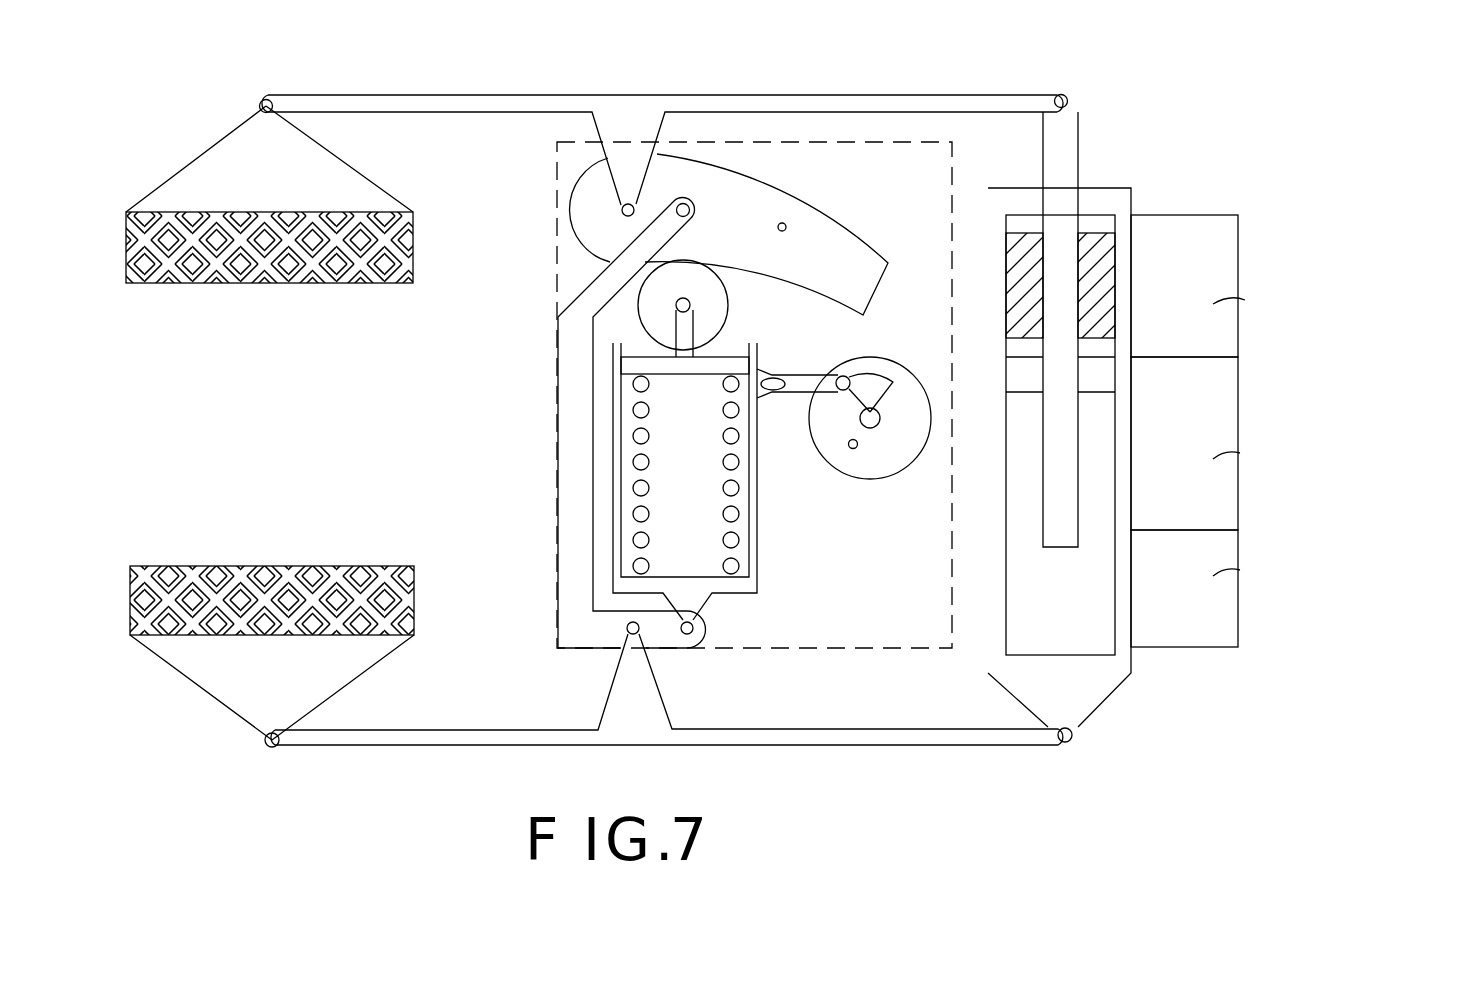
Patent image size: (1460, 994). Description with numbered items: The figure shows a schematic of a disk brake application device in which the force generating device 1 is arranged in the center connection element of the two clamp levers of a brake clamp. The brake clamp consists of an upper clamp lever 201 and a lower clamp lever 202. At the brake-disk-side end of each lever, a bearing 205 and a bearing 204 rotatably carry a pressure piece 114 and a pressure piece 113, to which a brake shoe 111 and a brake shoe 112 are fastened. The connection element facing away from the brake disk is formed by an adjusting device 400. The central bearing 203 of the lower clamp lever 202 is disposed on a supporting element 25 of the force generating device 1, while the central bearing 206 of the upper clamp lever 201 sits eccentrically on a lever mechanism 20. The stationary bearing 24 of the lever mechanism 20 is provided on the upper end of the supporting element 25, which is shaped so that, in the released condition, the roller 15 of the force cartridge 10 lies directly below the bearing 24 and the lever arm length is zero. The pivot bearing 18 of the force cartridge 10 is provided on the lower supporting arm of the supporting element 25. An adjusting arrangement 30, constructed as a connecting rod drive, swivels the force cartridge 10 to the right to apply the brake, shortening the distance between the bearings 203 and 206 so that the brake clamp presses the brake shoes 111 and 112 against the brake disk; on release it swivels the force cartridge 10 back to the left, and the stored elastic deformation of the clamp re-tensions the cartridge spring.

The force generating device 1 is at (753, 652).
The force cartridge 10 is at (790, 530).
The roller 15 is at (729, 307).
The pivot bearing 18 is at (694, 628).
The lever mechanism 20 is at (785, 224).
The bearing 24 is at (690, 208).
The supporting element 25 is at (560, 551).
The adjusting arrangement 30 is at (855, 449).
The brake shoe 111 is at (338, 284).
The brake shoe 112 is at (264, 566).
The pressure piece 113 is at (217, 703).
The pressure piece 114 is at (357, 168).
The upper clamp lever 201 is at (933, 94).
The lower clamp lever 202 is at (942, 748).
The central bearing 203 is at (628, 634).
The bearing 204 is at (272, 748).
The bearing 205 is at (268, 98).
The central bearing 206 is at (623, 215).
The adjusting device 400 is at (1131, 190).